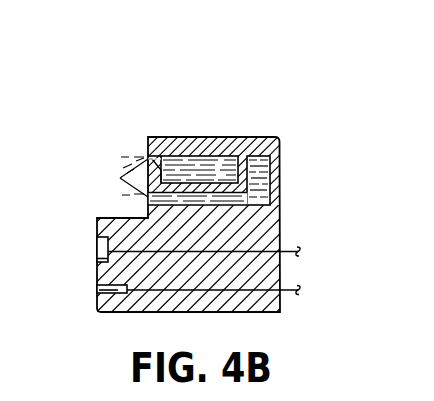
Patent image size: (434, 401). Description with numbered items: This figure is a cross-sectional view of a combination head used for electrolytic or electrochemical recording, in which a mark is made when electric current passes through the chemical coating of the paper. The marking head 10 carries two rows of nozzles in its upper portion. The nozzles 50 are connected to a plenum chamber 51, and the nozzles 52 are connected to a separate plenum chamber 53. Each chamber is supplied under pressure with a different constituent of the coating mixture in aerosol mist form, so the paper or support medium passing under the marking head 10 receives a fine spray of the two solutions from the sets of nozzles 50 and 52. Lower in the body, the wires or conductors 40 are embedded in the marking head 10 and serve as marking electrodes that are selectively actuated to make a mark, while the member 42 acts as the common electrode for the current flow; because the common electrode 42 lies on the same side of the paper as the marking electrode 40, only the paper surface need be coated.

The marking head 10 is at (267, 137).
The plenum chamber 53 is at (195, 162).
The nozzles 52 is at (148, 157).
The plenum chamber 51 is at (265, 192).
The nozzles 50 is at (148, 198).
The common electrode 42 is at (97, 243).
The wires or conductors 40 is at (98, 290).